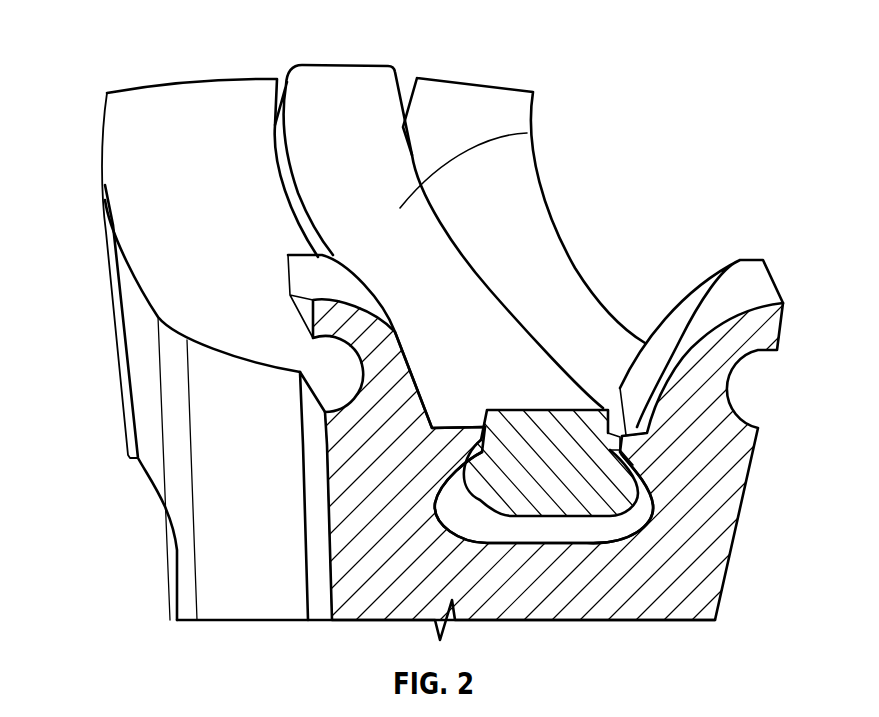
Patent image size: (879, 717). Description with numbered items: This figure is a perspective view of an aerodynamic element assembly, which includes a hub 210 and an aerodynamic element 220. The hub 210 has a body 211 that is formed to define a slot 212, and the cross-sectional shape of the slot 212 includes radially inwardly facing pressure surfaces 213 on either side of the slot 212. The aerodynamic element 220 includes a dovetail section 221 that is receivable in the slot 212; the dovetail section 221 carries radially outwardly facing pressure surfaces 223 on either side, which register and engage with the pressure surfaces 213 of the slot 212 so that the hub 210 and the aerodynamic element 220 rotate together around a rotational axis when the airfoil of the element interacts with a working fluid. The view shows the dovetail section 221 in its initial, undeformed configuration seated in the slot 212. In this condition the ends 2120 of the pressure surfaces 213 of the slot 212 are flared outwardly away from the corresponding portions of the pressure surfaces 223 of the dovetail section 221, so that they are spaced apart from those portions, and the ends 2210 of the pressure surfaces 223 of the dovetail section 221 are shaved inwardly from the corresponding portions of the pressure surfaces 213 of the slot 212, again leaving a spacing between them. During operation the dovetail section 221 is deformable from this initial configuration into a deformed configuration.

The hub 210 is at (112, 182).
The body 211 is at (173, 250).
The slot 212 is at (543, 537).
The pressure surfaces 213 is at (597, 548).
The aerodynamic element 220 is at (453, 243).
The dovetail section 221 is at (527, 133).
The pressure surfaces 223 is at (490, 515).
The ends 2120 is at (257, 93).
The ends 2210 is at (365, 80).